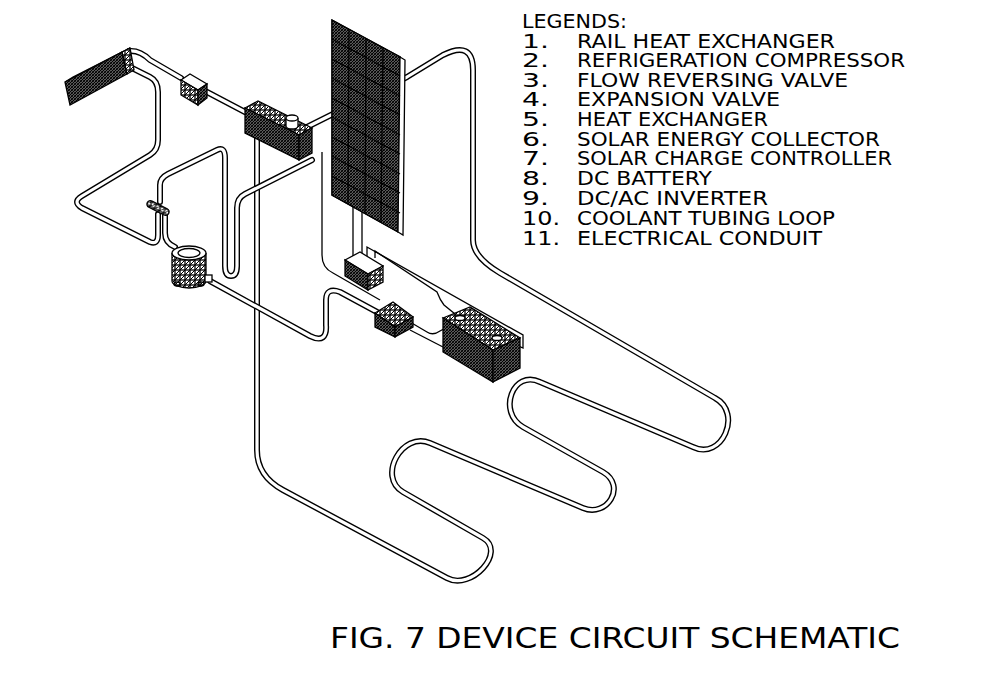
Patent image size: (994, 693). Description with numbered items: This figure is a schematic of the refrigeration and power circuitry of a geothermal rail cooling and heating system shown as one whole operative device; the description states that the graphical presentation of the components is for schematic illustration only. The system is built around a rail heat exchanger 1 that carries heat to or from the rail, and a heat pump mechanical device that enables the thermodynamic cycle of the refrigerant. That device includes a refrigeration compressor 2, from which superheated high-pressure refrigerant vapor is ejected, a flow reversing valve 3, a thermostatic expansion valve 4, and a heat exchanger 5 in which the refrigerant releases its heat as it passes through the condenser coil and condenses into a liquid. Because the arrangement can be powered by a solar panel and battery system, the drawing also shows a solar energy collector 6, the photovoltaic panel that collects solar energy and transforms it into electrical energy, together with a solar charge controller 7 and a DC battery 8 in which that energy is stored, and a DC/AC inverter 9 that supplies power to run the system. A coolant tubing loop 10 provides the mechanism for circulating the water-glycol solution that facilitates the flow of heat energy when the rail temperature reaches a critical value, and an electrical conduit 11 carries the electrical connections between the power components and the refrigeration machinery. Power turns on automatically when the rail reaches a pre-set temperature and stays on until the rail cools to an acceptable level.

The rail heat exchanger 1 is at (66, 88).
The refrigeration compressor 2 is at (182, 280).
The flow reversing valve 3 is at (148, 210).
The expansion valve 4 is at (197, 76).
The heat exchanger 5 is at (263, 105).
The solar energy collector 6 is at (365, 38).
The solar charge controller 7 is at (378, 283).
The DC battery 8 is at (483, 360).
The DC/AC inverter 9 is at (383, 323).
The coolant tubing loop 10 is at (472, 115).
The electrical conduit 11 is at (270, 307).